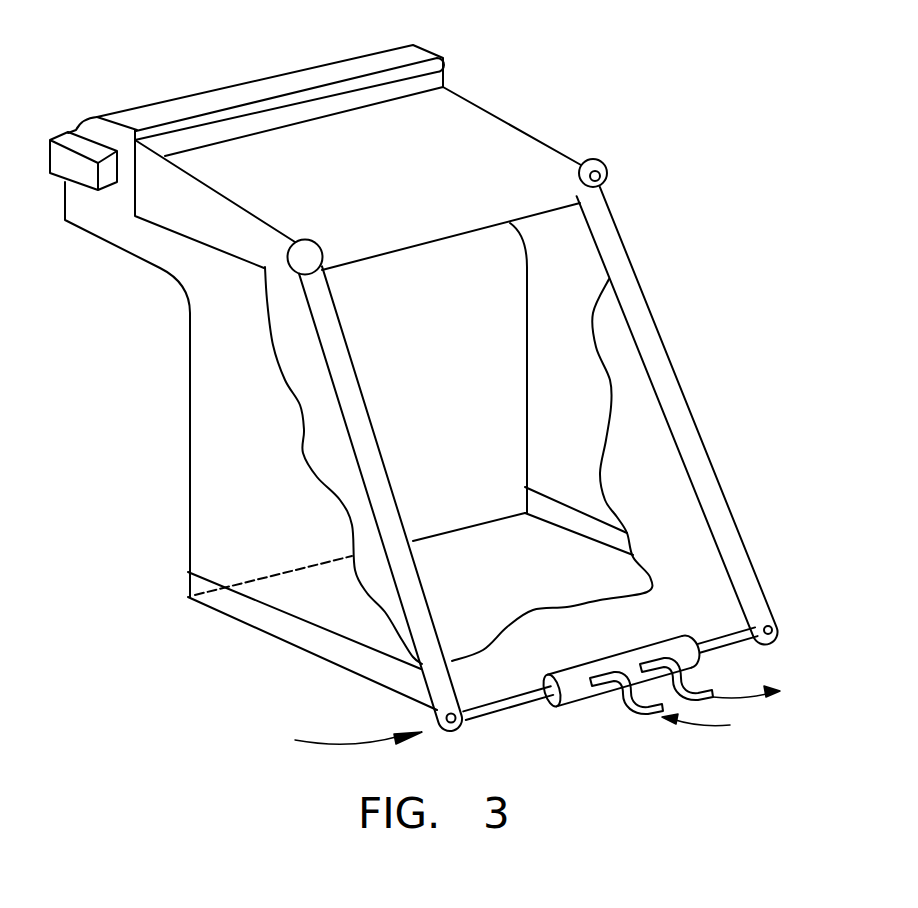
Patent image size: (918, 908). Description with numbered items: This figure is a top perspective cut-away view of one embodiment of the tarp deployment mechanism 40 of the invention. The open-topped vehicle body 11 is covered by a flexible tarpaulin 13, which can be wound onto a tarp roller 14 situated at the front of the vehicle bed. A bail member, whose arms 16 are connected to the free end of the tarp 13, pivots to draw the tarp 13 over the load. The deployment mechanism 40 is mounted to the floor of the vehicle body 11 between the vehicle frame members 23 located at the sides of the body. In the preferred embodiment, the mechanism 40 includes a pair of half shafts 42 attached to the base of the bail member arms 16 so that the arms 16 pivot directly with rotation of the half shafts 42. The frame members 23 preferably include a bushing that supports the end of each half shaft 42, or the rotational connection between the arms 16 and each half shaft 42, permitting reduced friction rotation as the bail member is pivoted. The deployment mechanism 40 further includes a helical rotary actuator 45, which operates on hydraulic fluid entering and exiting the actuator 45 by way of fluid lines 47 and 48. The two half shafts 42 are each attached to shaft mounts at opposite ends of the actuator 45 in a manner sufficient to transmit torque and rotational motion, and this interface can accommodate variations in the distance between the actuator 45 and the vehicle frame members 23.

The vehicle body 11 is at (215, 368).
The flexible tarpaulin 13 is at (503, 143).
The tarp roller 14 is at (247, 88).
The bail member arms 16 is at (357, 422).
The vehicle frame members 23 is at (328, 645).
The deployment mechanism 40 is at (339, 739).
The half shafts 42 is at (500, 708).
The helical rotary actuator 45 is at (673, 640).
The fluid line 47 is at (612, 677).
The fluid line 48 is at (655, 662).